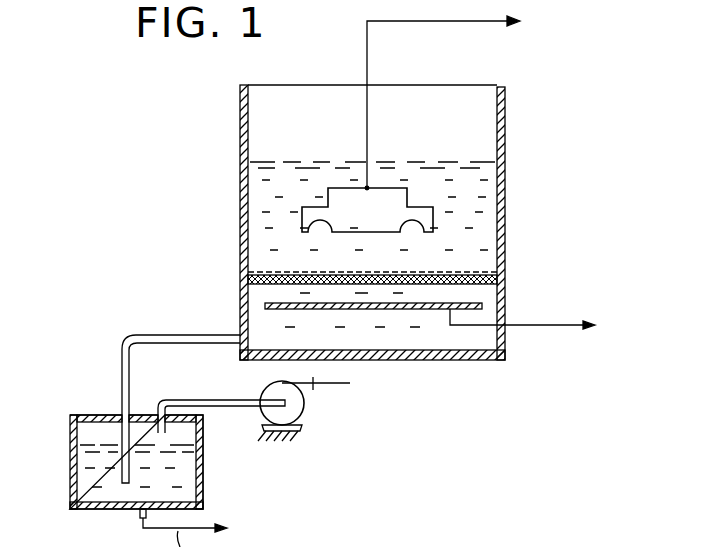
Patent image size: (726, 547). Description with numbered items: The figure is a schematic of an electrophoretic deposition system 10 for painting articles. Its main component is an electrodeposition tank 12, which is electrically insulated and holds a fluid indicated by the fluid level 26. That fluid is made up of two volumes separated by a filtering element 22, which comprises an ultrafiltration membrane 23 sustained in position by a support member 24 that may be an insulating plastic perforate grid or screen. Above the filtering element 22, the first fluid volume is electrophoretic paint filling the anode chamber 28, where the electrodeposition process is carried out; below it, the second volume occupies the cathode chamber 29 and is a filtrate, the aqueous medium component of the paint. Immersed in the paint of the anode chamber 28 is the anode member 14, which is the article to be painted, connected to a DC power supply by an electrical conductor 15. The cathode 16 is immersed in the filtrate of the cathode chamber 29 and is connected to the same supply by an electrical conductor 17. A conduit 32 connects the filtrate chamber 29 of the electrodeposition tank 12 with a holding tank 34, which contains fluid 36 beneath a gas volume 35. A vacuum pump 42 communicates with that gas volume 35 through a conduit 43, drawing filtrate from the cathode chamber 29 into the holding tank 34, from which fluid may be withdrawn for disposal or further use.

The electrophoretic deposition system 10 is at (545, 193).
The electrodeposition tank 12 is at (500, 95).
The anode member 14 is at (393, 198).
The electrical conductor 15 is at (445, 22).
The cathode 16 is at (338, 310).
The electrical conductor 17 is at (530, 330).
The filtering element 22 is at (278, 262).
The ultrafiltration membrane 23 is at (268, 272).
The support member 24 is at (262, 283).
The fluid level 26 is at (280, 160).
The anode chamber 28 is at (260, 200).
The cathode chamber 29 is at (410, 343).
The conduit 32 is at (163, 335).
The holding tank 34 is at (70, 478).
The gas volume 35 is at (95, 430).
The fluid 36 is at (182, 476).
The vacuum pump 42 is at (293, 404).
The conduit 43 is at (202, 400).